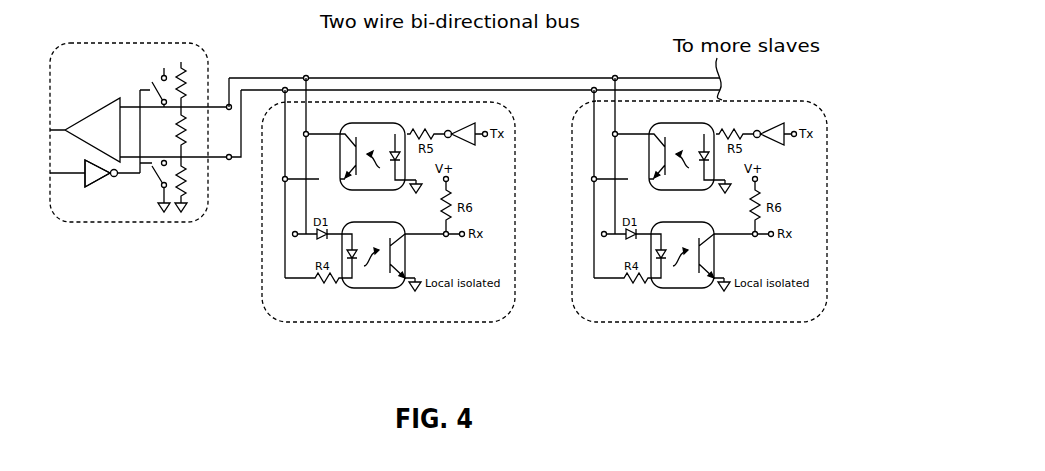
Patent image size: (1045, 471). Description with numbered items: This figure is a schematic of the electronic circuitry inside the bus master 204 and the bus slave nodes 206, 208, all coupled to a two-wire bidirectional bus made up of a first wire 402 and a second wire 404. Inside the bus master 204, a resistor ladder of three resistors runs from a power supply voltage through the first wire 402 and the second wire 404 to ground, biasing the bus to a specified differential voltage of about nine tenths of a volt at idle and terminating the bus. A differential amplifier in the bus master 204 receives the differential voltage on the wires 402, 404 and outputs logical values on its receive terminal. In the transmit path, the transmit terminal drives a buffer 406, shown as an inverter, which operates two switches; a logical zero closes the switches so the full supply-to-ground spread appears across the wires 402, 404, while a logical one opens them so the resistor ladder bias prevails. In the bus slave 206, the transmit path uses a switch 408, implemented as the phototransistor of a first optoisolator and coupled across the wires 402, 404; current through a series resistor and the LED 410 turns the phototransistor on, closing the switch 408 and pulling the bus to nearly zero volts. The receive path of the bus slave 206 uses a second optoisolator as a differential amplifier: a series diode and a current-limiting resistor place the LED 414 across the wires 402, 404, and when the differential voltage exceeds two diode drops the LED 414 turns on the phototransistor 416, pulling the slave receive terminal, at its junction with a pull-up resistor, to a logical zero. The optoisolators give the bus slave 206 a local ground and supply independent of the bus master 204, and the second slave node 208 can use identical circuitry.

The bus master 204 is at (141, 164).
The bus slave node 206 is at (386, 218).
The second slave node 208 is at (603, 322).
The first wire 402 is at (245, 75).
The second wire 404 is at (233, 162).
The buffer 406 is at (115, 186).
The switch 408 is at (345, 137).
The LED 410 is at (393, 165).
The LED 414 is at (355, 277).
The phototransistor 416 is at (405, 240).